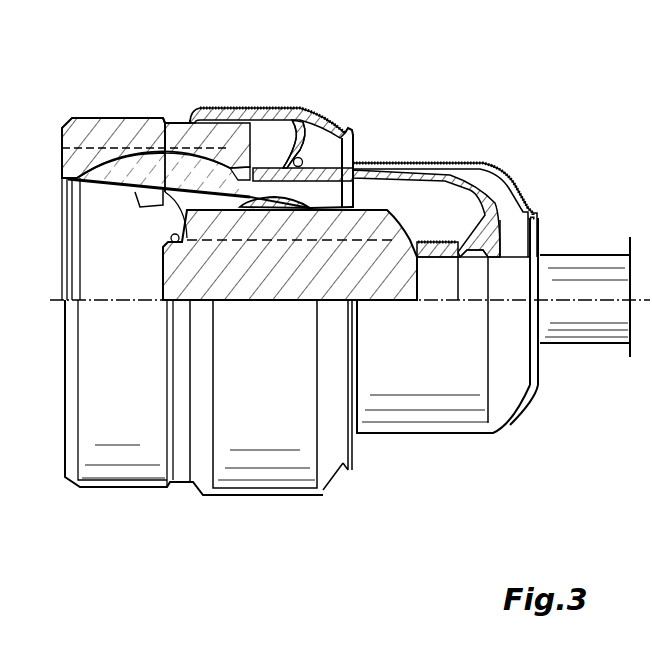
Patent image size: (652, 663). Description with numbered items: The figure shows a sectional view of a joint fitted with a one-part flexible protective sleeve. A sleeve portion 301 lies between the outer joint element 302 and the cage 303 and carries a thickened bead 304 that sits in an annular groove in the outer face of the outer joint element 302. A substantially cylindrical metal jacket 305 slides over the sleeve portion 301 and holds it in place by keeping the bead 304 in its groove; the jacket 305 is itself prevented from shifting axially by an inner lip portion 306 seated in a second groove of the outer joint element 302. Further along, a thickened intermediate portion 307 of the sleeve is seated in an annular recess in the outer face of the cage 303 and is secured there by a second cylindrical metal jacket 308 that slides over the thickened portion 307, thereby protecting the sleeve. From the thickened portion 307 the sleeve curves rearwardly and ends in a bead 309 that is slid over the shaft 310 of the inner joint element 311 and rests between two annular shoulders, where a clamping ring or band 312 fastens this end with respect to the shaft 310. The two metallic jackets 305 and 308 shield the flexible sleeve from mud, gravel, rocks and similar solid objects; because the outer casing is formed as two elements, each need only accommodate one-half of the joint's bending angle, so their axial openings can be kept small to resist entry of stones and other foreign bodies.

The sleeve portion 301 is at (300, 107).
The outer joint element 302 is at (72, 127).
The cage 303 is at (117, 167).
The bead 304 is at (212, 110).
The cylindrical metal jacket 305 is at (253, 107).
The inner lip portion 306 is at (177, 122).
The thickened intermediate portion 307 is at (312, 163).
The cylindrical metal jacket 308 is at (507, 177).
The bead 309 is at (423, 240).
The shaft 310 is at (438, 273).
The inner joint element 311 is at (361, 199).
The clamping ring 312 is at (448, 161).